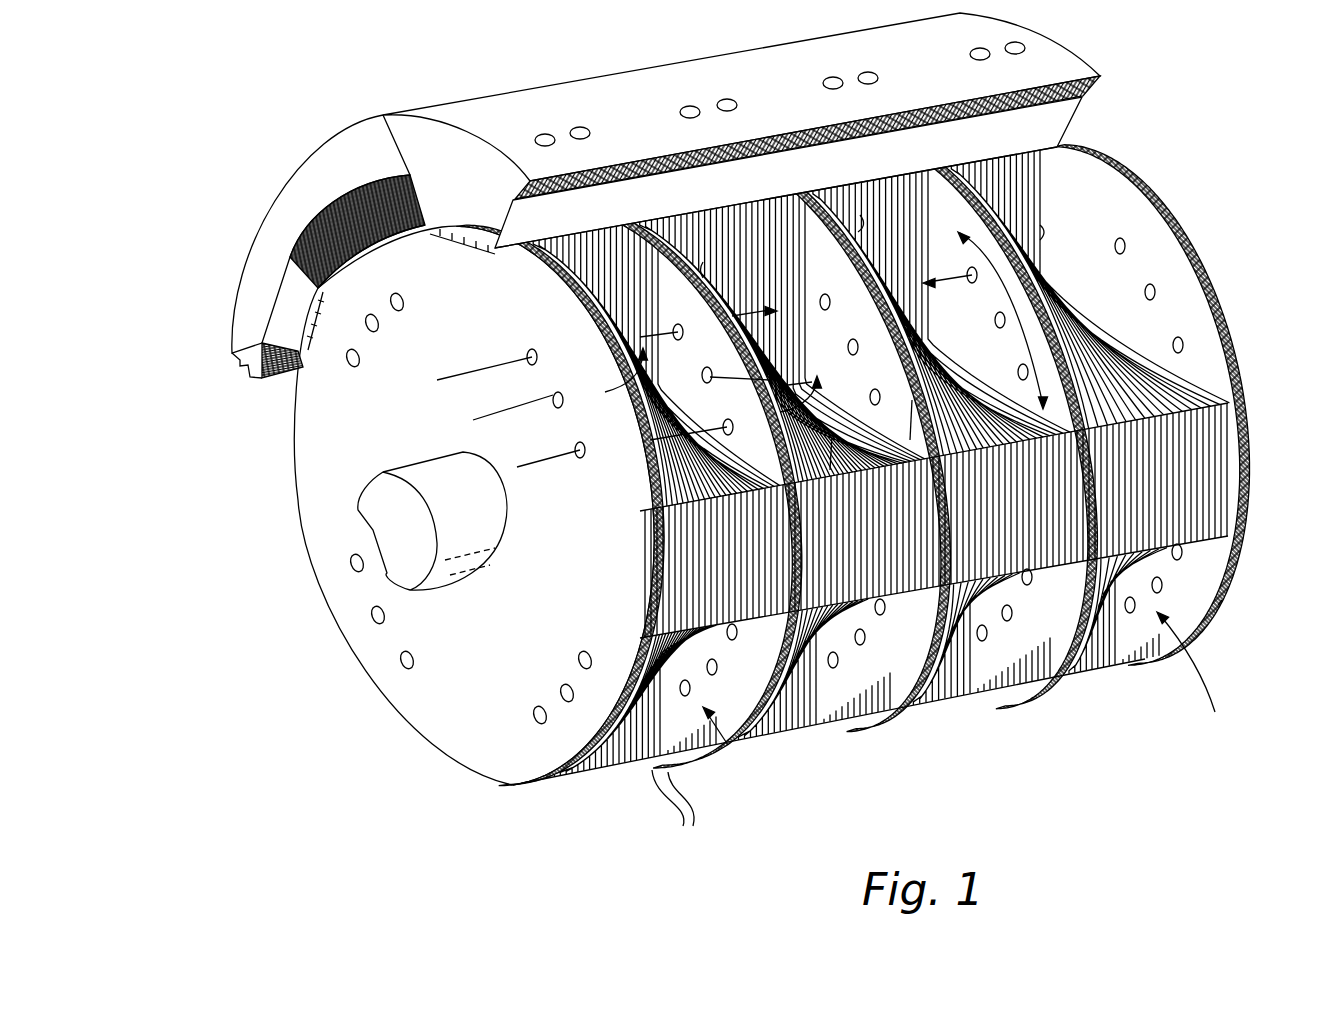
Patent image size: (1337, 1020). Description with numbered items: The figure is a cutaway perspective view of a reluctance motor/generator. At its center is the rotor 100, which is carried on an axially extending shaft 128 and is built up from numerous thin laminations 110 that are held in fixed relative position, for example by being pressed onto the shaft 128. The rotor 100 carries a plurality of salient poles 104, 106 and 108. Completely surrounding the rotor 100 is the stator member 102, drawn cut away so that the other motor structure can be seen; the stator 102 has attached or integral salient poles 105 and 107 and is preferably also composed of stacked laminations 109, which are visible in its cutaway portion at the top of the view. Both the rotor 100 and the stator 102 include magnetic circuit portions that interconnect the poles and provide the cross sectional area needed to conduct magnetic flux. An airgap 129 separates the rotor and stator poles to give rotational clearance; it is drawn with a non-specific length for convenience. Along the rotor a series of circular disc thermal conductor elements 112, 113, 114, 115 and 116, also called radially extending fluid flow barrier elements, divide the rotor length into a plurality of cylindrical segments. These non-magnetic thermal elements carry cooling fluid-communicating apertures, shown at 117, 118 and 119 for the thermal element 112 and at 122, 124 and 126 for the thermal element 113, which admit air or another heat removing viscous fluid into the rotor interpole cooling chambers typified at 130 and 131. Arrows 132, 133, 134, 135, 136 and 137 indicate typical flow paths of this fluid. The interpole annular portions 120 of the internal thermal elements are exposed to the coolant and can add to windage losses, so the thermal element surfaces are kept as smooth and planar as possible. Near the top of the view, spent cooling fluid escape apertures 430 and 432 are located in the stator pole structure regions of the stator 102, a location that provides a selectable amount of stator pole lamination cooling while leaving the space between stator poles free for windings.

The rotor 100 is at (440, 652).
The stator member 102 is at (376, 112).
The salient pole 104 is at (470, 778).
The salient pole 105 is at (292, 318).
The salient pole 106 is at (1150, 500).
The salient pole 107 is at (430, 195).
The salient pole 108 is at (608, 285).
The stacked laminations 109 is at (670, 155).
The laminations 110 is at (693, 826).
The thermal element 112 is at (466, 256).
The thermal element 113 is at (703, 260).
The thermal element 114 is at (860, 215).
The thermal element 115 is at (1040, 225).
The thermal element 116 is at (1218, 605).
The cooling fluid-communicating aperture 117 is at (532, 362).
The cooling fluid-communicating aperture 118 is at (558, 405).
The cooling fluid-communicating aperture 119 is at (580, 455).
The interpole annular portion 120 is at (1030, 300).
The cooling fluid-communicating aperture 122 is at (832, 435).
The cooling fluid-communicating aperture 124 is at (912, 400).
The cooling fluid-communicating aperture 126 is at (732, 316).
The shaft 128 is at (440, 583).
The airgap 129 is at (474, 238).
The cooling chamber 130 is at (728, 745).
The cooling chamber 131 is at (1215, 712).
The flow path arrow 132 is at (480, 370).
The flow path arrow 133 is at (480, 418).
The flow path arrow 134 is at (518, 466).
The flow path arrow 135 is at (676, 330).
The flow path arrow 136 is at (925, 280).
The flow path arrow 137 is at (726, 425).
The escape aperture 430 is at (546, 132).
The escape aperture 432 is at (581, 125).